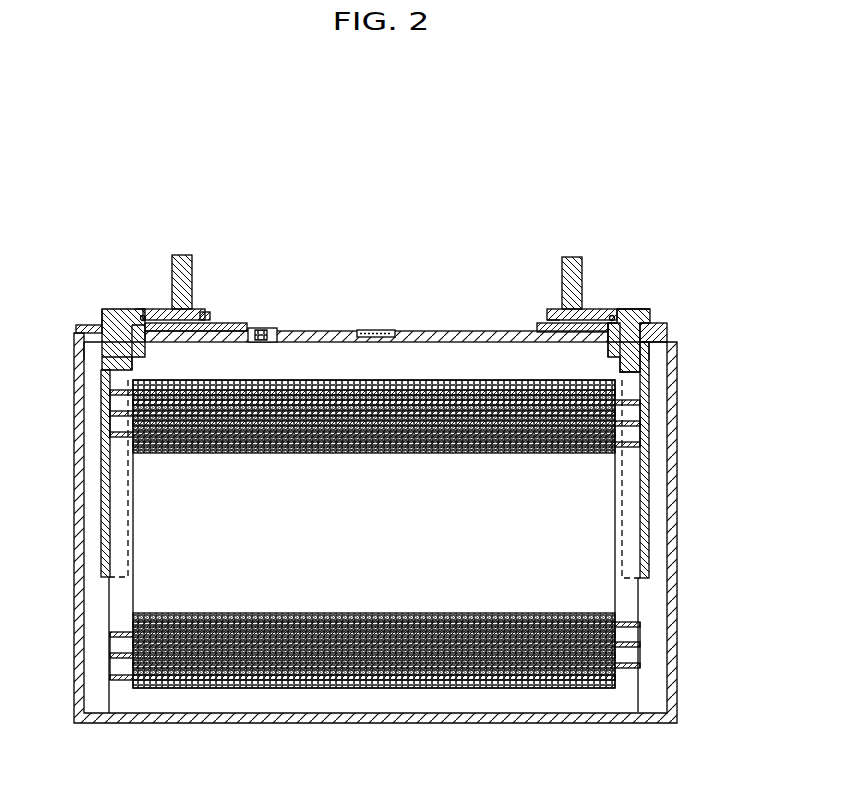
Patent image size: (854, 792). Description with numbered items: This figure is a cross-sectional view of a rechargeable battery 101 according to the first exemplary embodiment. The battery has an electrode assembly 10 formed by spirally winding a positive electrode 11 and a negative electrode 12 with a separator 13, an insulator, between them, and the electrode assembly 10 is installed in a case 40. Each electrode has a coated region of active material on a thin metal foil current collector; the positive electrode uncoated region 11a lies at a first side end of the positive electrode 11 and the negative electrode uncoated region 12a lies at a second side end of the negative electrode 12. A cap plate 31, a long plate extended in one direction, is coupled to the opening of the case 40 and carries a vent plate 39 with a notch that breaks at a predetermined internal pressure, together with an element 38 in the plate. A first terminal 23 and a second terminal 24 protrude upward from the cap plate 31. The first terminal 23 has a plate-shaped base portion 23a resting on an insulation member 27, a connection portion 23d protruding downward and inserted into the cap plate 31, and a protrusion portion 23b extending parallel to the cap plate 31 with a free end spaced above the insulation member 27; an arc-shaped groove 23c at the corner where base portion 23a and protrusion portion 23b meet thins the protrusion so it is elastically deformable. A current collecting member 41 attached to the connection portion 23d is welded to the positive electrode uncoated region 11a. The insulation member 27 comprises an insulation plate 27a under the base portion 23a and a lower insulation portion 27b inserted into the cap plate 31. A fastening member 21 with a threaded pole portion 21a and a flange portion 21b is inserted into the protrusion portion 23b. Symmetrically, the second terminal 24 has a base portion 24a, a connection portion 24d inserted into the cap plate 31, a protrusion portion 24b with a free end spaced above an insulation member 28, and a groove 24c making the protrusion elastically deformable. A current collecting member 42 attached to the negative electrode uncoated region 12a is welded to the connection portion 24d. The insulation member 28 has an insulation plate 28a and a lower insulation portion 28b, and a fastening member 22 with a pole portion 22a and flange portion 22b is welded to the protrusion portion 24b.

The rechargeable battery 101 is at (357, 180).
The electrode assembly 10 is at (371, 582).
The positive electrode 11 is at (359, 582).
The positive electrode uncoated region 11a is at (114, 684).
The negative electrode 12 is at (386, 587).
The negative electrode uncoated region 12a is at (625, 676).
The separator 13 is at (375, 662).
The fastening member 21 is at (203, 257).
The pole portion 21a is at (187, 270).
The flange portion 21b is at (200, 312).
The fastening member 22 is at (555, 255).
The pole portion 22a is at (565, 268).
The flange portion 22b is at (558, 312).
The first terminal 23 is at (142, 302).
The base portion 23a is at (93, 318).
The protrusion portion 23b is at (205, 316).
The groove 23c is at (141, 316).
The connection portion 23d is at (110, 367).
The second terminal 24 is at (615, 297).
The base portion 24a is at (631, 316).
The protrusion portion 24b is at (548, 318).
The groove 24c is at (614, 316).
The connection portion 24d is at (638, 365).
The insulation member 27 is at (175, 328).
The insulation plate 27a is at (225, 328).
The lower insulation portion 27b is at (108, 362).
The insulation member 28 is at (580, 307).
The insulation plate 28a is at (540, 328).
The lower insulation portion 28b is at (652, 352).
The cap plate 31 is at (405, 335).
The electrolyte injection sealing plug 38 is at (262, 342).
The vent plate 39 is at (366, 330).
The case 40 is at (676, 467).
The current collecting member 41 is at (106, 495).
The current collecting member 42 is at (645, 523).